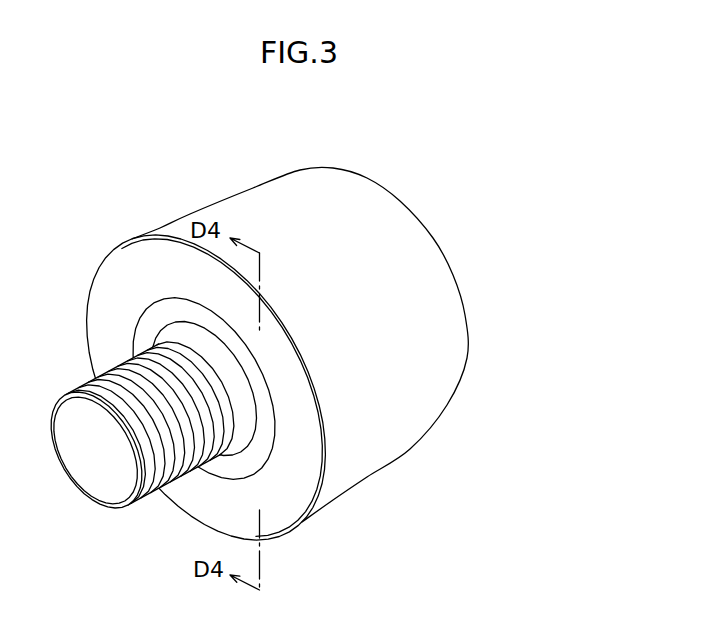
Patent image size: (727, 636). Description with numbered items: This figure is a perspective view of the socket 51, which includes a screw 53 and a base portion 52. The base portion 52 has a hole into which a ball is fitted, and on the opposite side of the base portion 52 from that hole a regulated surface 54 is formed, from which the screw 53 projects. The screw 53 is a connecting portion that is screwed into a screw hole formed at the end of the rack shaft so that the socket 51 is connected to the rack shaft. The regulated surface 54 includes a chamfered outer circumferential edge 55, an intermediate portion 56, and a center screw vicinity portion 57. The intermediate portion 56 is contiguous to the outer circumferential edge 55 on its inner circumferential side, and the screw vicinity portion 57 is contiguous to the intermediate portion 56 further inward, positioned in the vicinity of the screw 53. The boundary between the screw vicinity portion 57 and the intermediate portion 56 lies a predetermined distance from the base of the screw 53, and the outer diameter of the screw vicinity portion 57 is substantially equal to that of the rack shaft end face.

The socket 51 is at (408, 134).
The base portion 52 is at (310, 169).
The screw 53 is at (143, 507).
The regulated surface 54 is at (260, 387).
The chamfered outer circumferential edge 55 is at (307, 365).
The intermediate portion 56 is at (288, 398).
The screw vicinity portion 57 is at (388, 327).